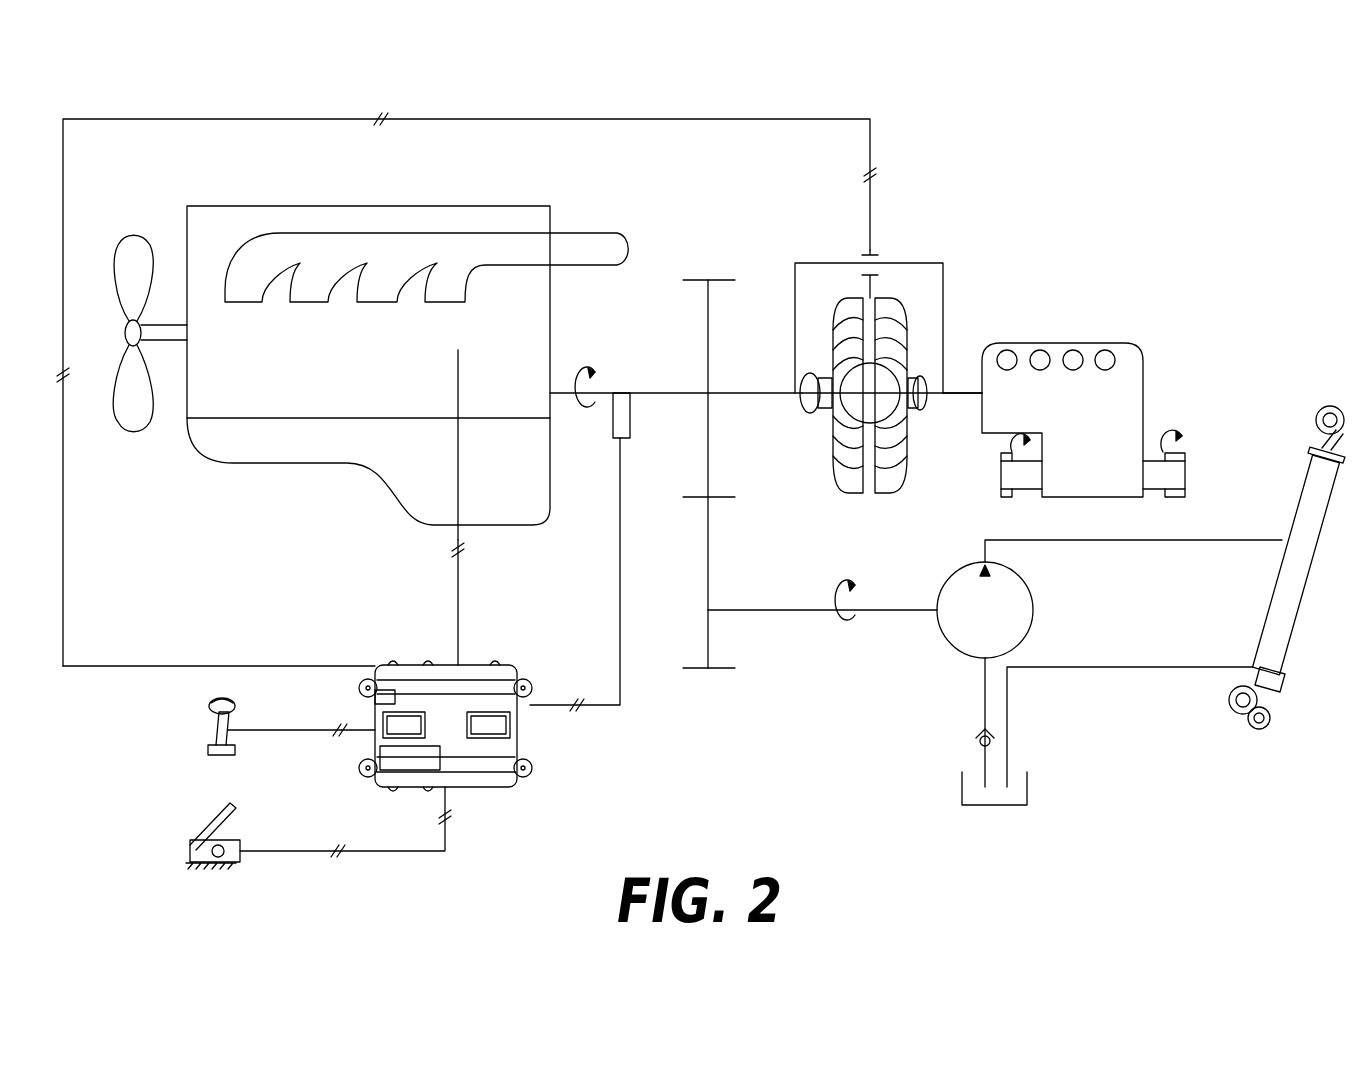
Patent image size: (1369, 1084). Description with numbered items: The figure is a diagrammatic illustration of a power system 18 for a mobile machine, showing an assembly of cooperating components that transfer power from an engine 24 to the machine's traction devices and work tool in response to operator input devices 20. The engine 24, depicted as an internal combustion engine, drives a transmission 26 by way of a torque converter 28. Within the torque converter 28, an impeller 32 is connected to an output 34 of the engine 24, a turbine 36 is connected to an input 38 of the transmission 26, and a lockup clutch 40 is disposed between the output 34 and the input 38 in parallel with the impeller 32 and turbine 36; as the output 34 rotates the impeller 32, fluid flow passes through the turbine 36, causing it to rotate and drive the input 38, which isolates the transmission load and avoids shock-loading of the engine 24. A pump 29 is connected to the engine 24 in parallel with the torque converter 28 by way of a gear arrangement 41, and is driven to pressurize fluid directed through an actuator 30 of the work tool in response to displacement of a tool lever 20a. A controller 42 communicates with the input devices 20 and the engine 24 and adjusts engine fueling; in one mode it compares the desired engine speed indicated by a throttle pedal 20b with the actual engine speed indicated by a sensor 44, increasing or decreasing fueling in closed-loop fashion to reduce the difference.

The power system 18 is at (1143, 98).
The input devices 20 is at (196, 781).
The tool lever 20a is at (229, 750).
The throttle pedal 20b is at (232, 840).
The engine 24 is at (359, 366).
The transmission 26 is at (1112, 457).
The torque converter 28 is at (968, 245).
The pump 29 is at (995, 622).
The actuator 30 is at (1283, 597).
The impeller 32 is at (838, 472).
The output 34 is at (680, 393).
The turbine 36 is at (898, 488).
The input 38 is at (965, 393).
The lockup clutch 40 is at (877, 258).
The gear arrangement 41 is at (708, 686).
The controller 42 is at (530, 745).
The sensor 44 is at (632, 418).